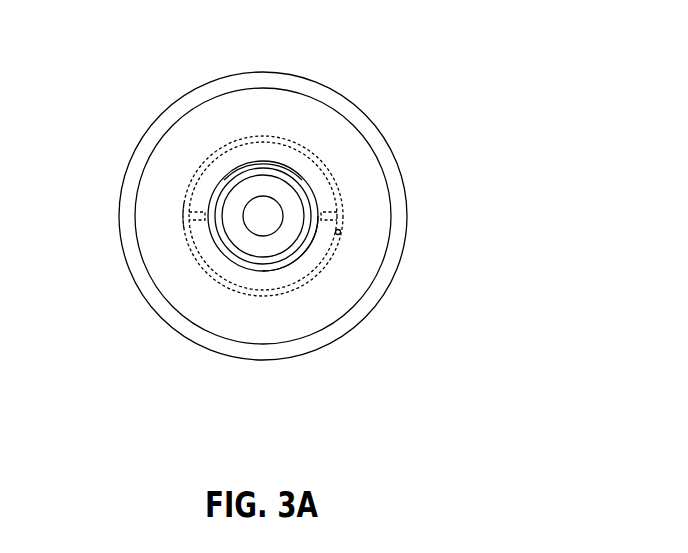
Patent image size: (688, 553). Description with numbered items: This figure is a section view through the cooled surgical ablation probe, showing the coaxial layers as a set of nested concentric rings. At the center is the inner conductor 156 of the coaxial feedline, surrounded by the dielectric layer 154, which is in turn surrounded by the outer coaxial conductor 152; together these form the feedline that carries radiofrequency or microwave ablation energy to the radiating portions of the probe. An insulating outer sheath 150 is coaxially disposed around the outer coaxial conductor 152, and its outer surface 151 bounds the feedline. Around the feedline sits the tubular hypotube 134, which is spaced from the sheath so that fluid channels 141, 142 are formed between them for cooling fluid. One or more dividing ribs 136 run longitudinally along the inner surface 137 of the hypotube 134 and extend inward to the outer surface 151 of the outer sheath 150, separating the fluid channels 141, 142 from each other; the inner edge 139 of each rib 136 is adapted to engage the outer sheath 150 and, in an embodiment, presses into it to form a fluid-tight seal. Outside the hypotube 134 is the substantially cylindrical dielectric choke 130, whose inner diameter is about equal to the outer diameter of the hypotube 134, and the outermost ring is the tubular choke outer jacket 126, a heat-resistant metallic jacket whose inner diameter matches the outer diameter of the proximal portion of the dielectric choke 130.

The choke outer jacket 126 is at (298, 91).
The dielectric choke 130 is at (330, 132).
The hypotube 134 is at (203, 175).
The dividing ribs 136 is at (190, 210).
The inner surface of hypotube 137 is at (340, 228).
The inner edge of rib 139 is at (183, 223).
The fluid channel 141 is at (323, 185).
The fluid channel 142 is at (320, 250).
The insulating outer sheath 150 is at (267, 165).
The outer surface of outer sheath 151 is at (293, 263).
The outer coaxial conductor 152 is at (226, 188).
The dielectric layer 154 is at (252, 245).
The inner conductor 156 is at (262, 217).